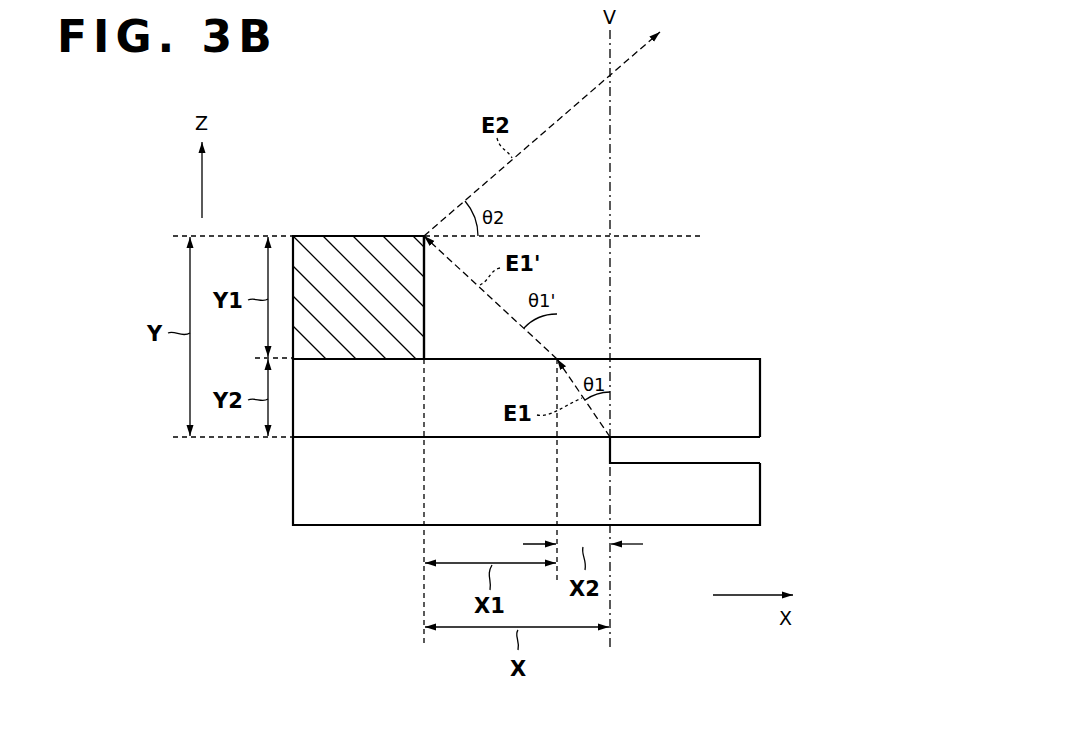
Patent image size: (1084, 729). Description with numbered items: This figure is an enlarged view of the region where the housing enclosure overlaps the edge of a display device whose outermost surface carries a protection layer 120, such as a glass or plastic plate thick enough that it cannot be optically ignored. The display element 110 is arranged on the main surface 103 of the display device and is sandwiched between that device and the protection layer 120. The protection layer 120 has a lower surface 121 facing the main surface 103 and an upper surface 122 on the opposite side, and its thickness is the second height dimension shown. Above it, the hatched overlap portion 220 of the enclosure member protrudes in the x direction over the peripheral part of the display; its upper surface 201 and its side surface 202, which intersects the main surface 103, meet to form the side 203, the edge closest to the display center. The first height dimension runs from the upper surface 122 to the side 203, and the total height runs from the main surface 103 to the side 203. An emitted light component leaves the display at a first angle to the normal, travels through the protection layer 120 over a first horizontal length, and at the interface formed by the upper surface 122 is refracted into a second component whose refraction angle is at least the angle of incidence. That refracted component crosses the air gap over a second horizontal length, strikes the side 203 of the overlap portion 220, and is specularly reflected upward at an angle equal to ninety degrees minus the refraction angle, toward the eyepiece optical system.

The upper surface 201 is at (320, 236).
The overlap portion 220 is at (350, 236).
The side 203 is at (424, 236).
The side surface 202 is at (424, 310).
The protection layer 120 is at (748, 398).
The upper surface 122 is at (315, 362).
The lower surface 121 is at (315, 440).
The display element 110 is at (748, 450).
The main surface 103 is at (686, 437).